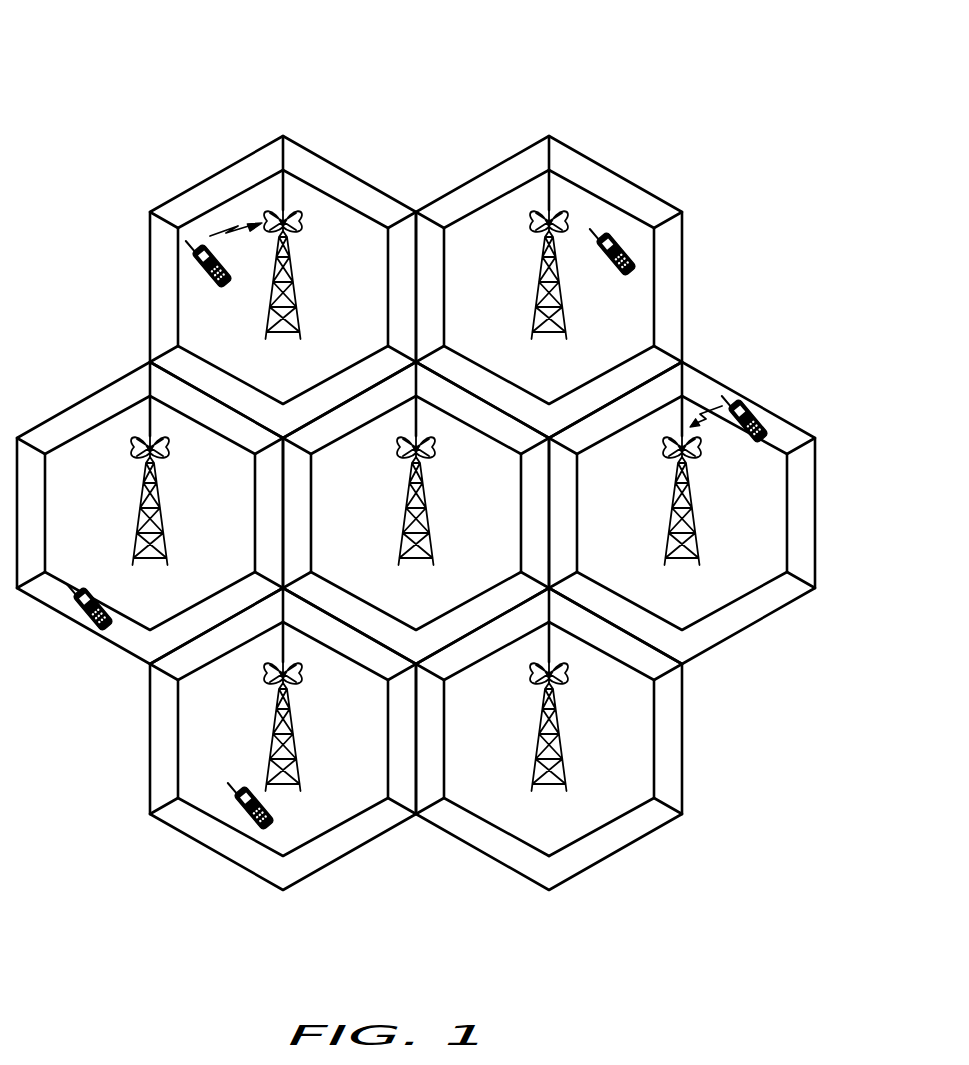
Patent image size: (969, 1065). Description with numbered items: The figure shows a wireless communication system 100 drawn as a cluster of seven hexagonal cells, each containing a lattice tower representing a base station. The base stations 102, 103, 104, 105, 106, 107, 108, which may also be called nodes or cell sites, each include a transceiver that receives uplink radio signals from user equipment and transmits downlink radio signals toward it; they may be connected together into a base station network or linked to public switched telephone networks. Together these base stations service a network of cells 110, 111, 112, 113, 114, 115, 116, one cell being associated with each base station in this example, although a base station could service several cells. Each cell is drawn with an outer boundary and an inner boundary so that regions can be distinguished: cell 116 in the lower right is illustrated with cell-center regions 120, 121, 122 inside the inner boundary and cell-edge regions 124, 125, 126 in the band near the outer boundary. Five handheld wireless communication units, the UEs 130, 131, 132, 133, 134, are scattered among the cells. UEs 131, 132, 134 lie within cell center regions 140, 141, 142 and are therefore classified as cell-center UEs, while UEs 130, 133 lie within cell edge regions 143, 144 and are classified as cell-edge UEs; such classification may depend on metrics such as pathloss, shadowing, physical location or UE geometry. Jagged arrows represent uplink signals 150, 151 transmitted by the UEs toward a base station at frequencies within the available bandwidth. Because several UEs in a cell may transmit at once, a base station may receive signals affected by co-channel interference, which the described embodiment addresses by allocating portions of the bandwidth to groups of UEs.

The wireless communication system 100 is at (724, 112).
The base station 102 is at (408, 500).
The base station 103 is at (672, 500).
The base station 104 is at (540, 274).
The base station 105 is at (292, 268).
The base station 106 is at (142, 498).
The base station 107 is at (275, 720).
The base station 108 is at (538, 722).
The cell 110 is at (549, 538).
The cell 111 is at (782, 608).
The cell 112 is at (604, 168).
The cell 113 is at (222, 170).
The cell 114 is at (85, 400).
The cell 115 is at (248, 872).
The cell 116 is at (610, 858).
The cell-center region 120 is at (633, 727).
The cell-center region 121 is at (472, 758).
The cell-center region 122 is at (580, 808).
The cell-edge region 124 is at (668, 766).
The cell-edge region 125 is at (432, 782).
The cell-edge region 126 is at (553, 873).
The wireless communication unit (UE) 130 is at (752, 422).
The wireless communication unit (UE) 131 is at (645, 255).
The wireless communication unit (UE) 132 is at (197, 260).
The wireless communication unit (UE) 133 is at (85, 615).
The wireless communication unit (UE) 134 is at (243, 812).
The cell center region 140 is at (633, 237).
The cell center region 141 is at (200, 303).
The cell center region 142 is at (322, 815).
The cell edge region 143 is at (798, 458).
The cell edge region 144 is at (135, 640).
The uplink signal 150 is at (722, 406).
The uplink signal 151 is at (210, 236).